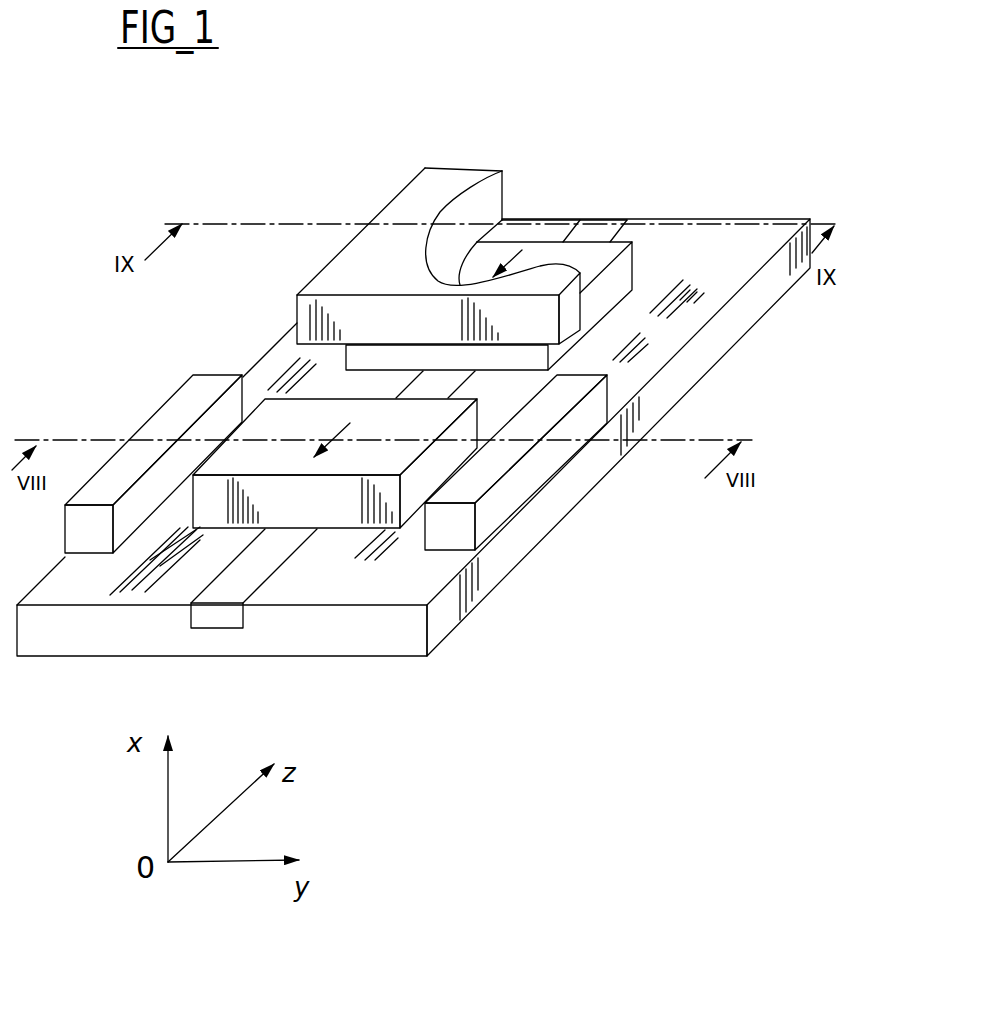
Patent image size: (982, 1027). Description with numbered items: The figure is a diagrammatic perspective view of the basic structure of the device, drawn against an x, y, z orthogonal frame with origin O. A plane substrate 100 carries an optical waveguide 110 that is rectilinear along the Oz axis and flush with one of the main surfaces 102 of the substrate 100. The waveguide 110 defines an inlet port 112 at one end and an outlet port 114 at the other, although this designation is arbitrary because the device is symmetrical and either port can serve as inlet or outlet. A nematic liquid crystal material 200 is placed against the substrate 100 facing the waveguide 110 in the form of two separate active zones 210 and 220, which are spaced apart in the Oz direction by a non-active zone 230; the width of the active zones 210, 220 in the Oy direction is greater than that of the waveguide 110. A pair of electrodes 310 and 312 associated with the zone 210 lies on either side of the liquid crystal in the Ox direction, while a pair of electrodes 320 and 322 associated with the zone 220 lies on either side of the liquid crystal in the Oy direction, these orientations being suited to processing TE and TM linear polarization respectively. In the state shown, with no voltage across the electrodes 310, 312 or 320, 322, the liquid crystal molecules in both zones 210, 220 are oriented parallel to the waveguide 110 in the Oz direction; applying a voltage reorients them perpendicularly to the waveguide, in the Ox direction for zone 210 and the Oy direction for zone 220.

The plane substrate 100 is at (740, 240).
The main surface 102 is at (700, 270).
The optical waveguide 110 is at (263, 562).
The inlet port 112 is at (657, 167).
The outlet port 114 is at (217, 617).
The nematic liquid crystal material 200 is at (316, 371).
The first active zone 210 is at (612, 290).
The second active zone 220 is at (213, 528).
The non-active zone 230 is at (355, 390).
The electrode 310 is at (462, 180).
The electrode 312 is at (645, 452).
The electrode 320 is at (103, 478).
The electrode 322 is at (510, 492).